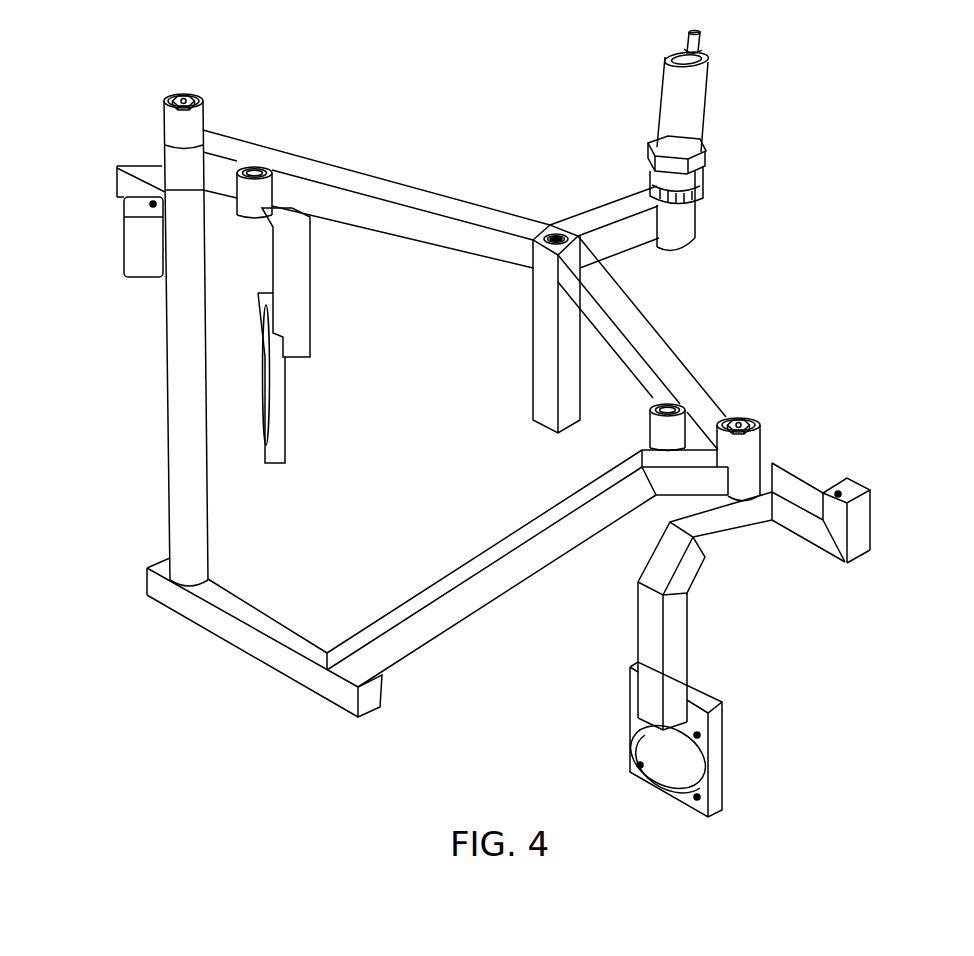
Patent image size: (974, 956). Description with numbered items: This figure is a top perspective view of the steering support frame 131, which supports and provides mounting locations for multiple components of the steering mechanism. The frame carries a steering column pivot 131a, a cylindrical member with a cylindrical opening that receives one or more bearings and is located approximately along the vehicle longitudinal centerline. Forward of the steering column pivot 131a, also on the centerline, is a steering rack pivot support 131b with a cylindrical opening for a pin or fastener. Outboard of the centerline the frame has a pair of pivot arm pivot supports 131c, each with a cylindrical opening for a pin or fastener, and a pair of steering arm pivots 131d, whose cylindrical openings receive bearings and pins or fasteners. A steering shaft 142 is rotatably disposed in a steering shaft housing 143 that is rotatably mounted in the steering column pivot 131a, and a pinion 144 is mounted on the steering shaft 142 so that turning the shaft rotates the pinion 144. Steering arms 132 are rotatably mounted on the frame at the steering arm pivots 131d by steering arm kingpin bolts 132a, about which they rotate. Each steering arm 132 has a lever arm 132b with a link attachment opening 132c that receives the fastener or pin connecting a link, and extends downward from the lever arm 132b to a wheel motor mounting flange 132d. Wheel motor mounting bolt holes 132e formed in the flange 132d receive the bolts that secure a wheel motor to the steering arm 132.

The steering support frame 131 is at (383, 183).
The steering column pivot 131a is at (686, 229).
The steering rack pivot support 131b is at (556, 233).
The pivot arm pivot supports 131c is at (249, 205).
The steering arm pivots 131d is at (175, 127).
The steering arms 132 is at (294, 283).
The steering arm kingpin bolts 132a is at (185, 97).
The lever arm 132b is at (148, 229).
The link attachment opening 132c is at (152, 203).
The wheel motor mounting flange 132d is at (273, 406).
The wheel motor mounting bolt holes 132e is at (640, 767).
The steering shaft 142 is at (705, 62).
The steering shaft housing 143 is at (694, 102).
The pinion 144 is at (686, 200).